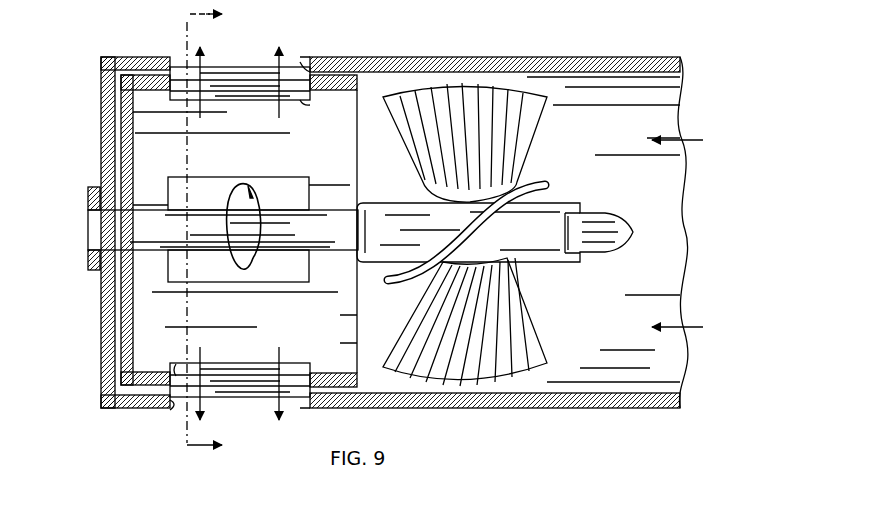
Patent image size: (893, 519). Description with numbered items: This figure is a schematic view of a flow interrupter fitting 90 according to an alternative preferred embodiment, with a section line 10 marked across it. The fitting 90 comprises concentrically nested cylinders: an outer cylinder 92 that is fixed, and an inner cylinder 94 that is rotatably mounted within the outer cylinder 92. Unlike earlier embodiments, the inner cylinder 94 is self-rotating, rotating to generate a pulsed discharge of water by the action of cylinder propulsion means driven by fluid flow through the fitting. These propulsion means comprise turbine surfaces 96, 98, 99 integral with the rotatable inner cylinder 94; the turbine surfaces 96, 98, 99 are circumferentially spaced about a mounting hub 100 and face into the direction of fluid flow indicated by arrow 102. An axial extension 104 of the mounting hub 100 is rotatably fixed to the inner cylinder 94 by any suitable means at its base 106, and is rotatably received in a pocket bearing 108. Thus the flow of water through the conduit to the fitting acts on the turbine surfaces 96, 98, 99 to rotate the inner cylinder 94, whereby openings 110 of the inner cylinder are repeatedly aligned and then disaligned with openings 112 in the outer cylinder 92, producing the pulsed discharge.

The section line 10- 10 is at (216, 229).
The flow interrupter fitting 90 is at (503, 50).
The outer cylinder 92 is at (585, 62).
The inner cylinder 94 is at (148, 372).
The turbine surface 96 is at (522, 130).
The turbine surface 98 is at (525, 330).
The turbine surface 99 is at (528, 181).
The mounting hub 100 is at (550, 255).
The arrow 102 is at (690, 140).
The axial extension 104 is at (208, 213).
The base 106 is at (137, 205).
The pocket bearing 108 is at (88, 212).
The openings 110 is at (305, 97).
The openings 112 is at (303, 62).